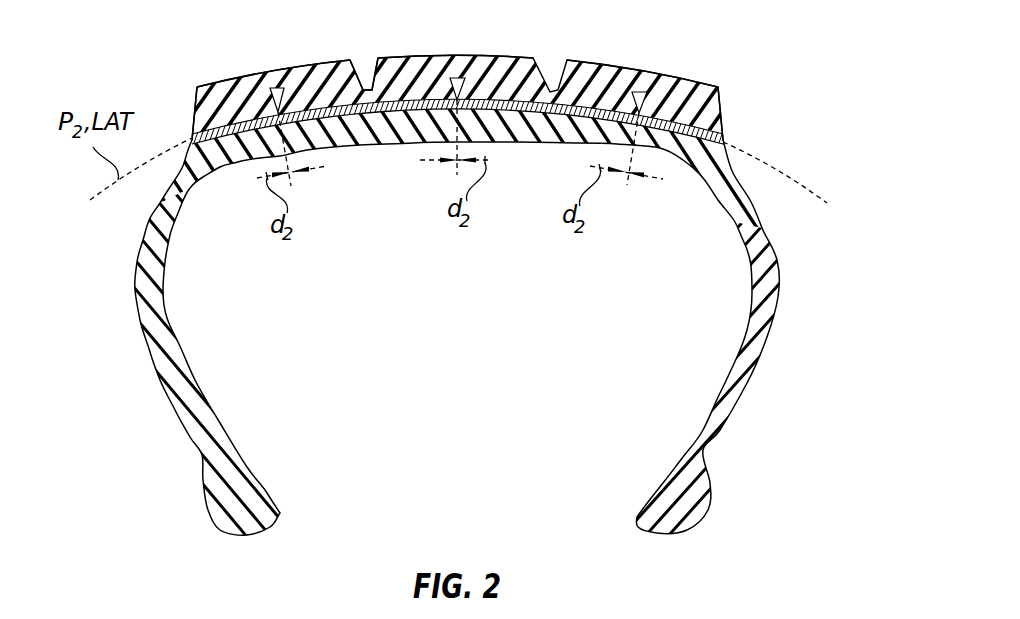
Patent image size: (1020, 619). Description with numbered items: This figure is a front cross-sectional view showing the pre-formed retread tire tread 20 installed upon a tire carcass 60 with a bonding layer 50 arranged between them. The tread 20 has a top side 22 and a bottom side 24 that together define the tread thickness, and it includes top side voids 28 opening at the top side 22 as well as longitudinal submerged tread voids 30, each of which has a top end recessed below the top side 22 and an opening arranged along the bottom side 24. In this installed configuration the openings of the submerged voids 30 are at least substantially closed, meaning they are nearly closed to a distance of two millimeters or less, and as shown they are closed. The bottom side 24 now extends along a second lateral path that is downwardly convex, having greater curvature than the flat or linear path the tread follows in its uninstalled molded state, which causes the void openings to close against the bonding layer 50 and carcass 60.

The tire tread 20 is at (718, 97).
The top side 22 is at (693, 78).
The bottom side 24 is at (700, 157).
The top side voids 28 is at (357, 61).
The longitudinal submerged tread voids 30 is at (274, 87).
The bonding layer 50 is at (720, 143).
The tire carcass 60 is at (780, 277).